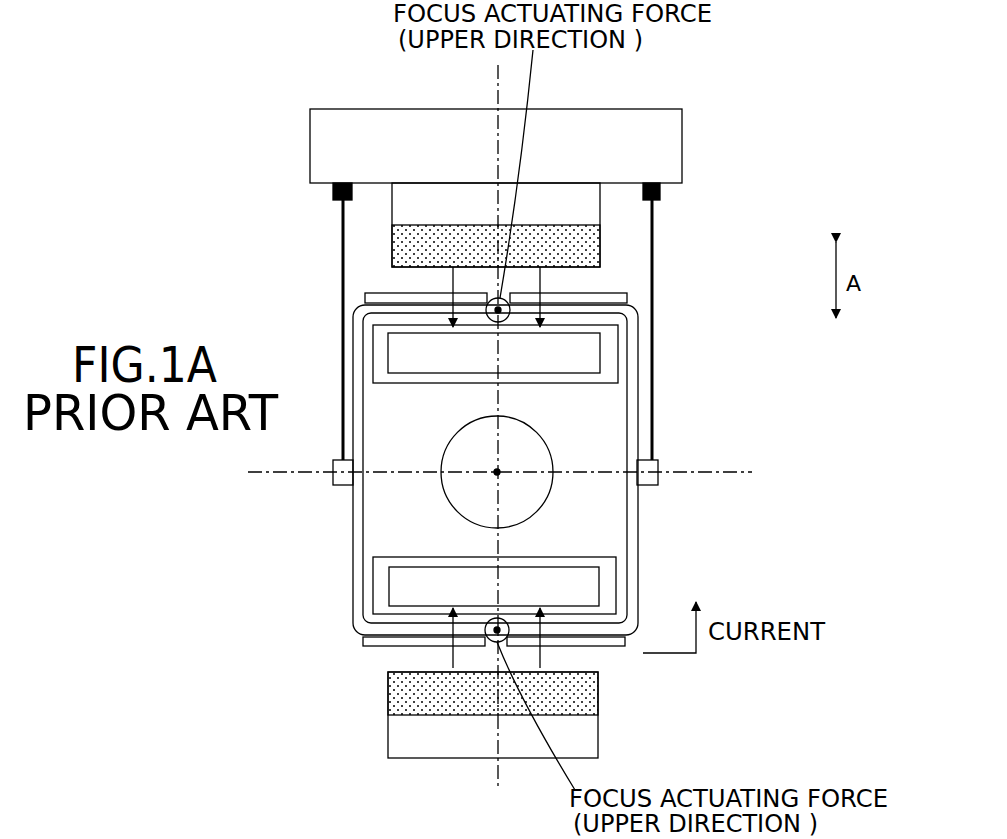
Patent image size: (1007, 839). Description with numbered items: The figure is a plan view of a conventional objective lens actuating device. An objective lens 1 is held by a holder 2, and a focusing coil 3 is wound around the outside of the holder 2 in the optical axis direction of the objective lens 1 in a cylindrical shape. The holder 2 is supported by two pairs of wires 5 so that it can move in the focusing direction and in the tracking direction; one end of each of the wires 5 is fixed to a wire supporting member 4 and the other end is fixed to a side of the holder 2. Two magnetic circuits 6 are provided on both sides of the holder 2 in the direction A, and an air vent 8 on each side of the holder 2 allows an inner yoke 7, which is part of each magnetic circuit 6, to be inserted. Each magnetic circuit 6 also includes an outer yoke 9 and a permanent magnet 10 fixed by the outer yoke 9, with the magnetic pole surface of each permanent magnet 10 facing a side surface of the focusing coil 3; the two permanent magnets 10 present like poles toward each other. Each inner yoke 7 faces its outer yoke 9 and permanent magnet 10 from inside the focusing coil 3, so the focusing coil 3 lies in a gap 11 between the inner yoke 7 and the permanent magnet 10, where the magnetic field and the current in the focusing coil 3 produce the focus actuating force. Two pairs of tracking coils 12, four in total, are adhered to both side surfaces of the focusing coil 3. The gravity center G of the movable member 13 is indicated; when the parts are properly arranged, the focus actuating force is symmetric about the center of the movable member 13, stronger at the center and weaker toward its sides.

The objective lens 1 is at (470, 440).
The holder 2 is at (607, 505).
The focusing coil 3 is at (632, 405).
The wire supporting member 4 is at (628, 130).
The wires 5 is at (343, 225).
The magnetic circuit 6 is at (705, 189).
The inner yoke 7 is at (590, 357).
The air vent 8 is at (380, 350).
The outer yoke 9 is at (562, 207).
The permanent magnet 10 is at (433, 230).
The gap 11 is at (595, 275).
The tracking coil 12 is at (380, 292).
The movable member 13 is at (670, 440).